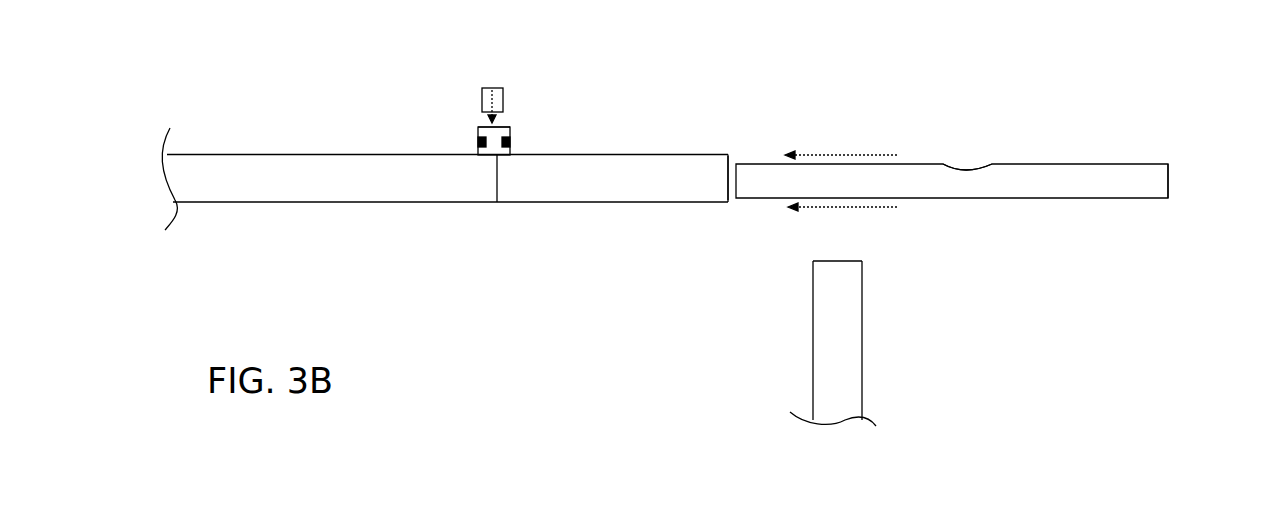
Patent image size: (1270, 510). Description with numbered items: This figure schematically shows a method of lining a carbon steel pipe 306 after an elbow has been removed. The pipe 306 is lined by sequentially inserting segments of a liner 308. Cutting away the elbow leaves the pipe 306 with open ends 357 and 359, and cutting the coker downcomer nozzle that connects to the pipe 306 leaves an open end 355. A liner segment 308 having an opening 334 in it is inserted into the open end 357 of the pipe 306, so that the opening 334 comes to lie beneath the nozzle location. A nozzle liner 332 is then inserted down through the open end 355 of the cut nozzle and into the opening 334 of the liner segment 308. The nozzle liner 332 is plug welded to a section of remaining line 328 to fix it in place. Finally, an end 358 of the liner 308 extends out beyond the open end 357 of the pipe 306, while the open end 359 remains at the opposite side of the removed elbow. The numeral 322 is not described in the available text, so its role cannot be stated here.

The pipe 306 is at (385, 206).
The liner segment 308 is at (1010, 147).
The carrier 322 is at (508, 135).
The section of remaining line 328 is at (497, 202).
The nozzle liner 332 is at (482, 88).
The opening 334 is at (965, 172).
The open end 355 is at (482, 125).
The open end 357 is at (728, 155).
The end of the liner 358 is at (1168, 164).
The open end 359 is at (845, 261).